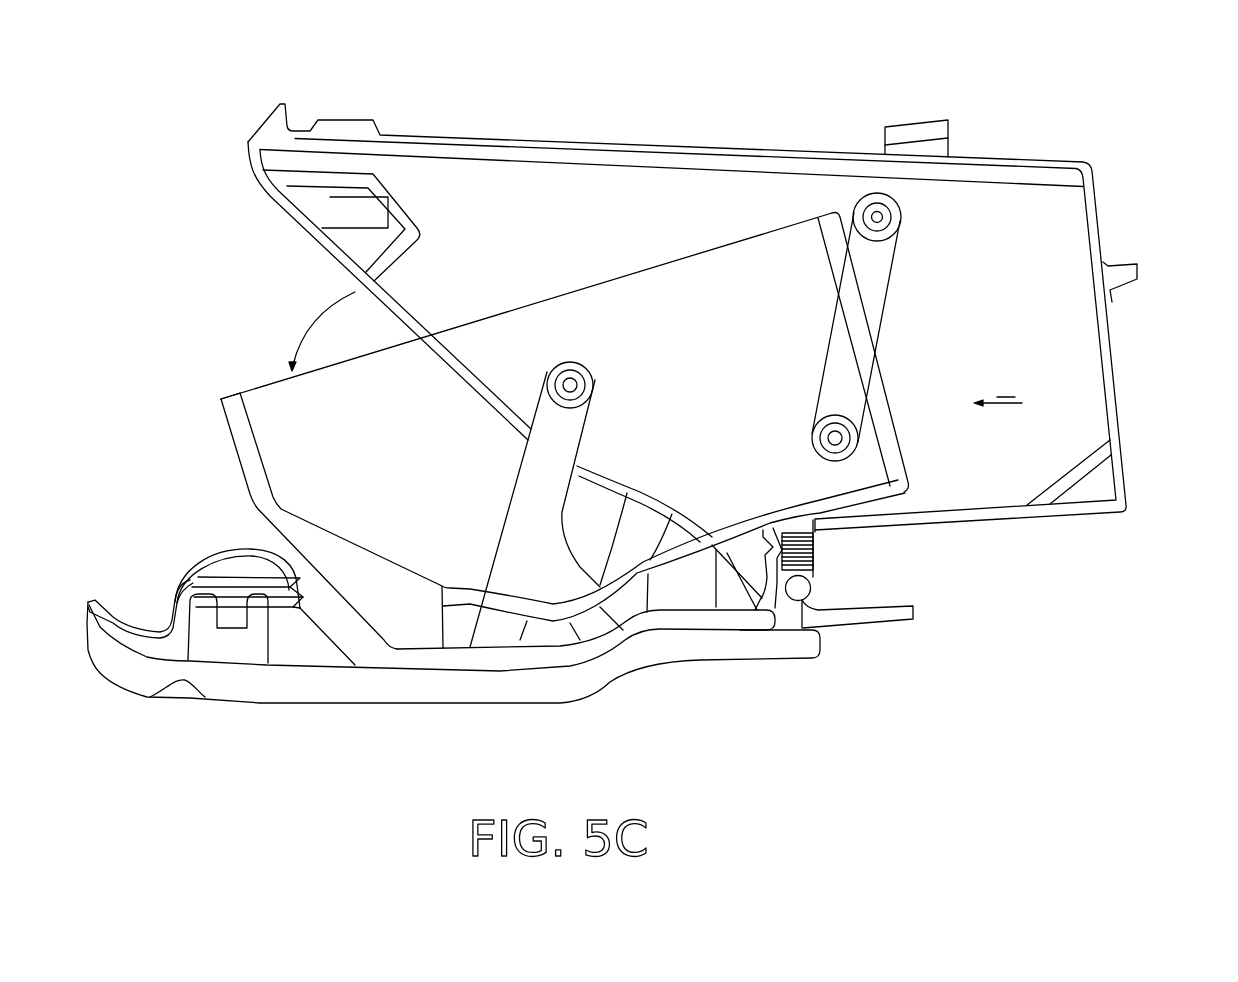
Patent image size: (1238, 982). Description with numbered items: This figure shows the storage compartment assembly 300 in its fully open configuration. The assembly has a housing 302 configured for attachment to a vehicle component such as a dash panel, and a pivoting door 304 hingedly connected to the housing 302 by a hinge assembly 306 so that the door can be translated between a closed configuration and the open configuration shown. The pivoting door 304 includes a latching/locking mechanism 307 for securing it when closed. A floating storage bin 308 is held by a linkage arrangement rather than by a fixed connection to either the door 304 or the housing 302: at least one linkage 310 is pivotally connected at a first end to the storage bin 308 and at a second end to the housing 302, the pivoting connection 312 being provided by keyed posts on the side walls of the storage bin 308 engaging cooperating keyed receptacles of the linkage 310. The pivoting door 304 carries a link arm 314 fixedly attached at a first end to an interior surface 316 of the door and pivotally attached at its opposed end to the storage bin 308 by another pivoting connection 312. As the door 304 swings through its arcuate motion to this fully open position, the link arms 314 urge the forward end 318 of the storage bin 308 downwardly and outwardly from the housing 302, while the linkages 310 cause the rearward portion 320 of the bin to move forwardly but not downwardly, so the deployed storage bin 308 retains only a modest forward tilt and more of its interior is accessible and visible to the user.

The storage compartment assembly 300 is at (1120, 77).
The housing 302 is at (1094, 210).
The pivoting door 304 is at (280, 690).
The hinge assembly 306 is at (826, 588).
The latching/locking mechanism 307 is at (180, 584).
The storage bin 308 is at (500, 322).
The linkage 310 is at (888, 258).
The pivoting connection 312 is at (577, 382).
The link arm 314 is at (532, 468).
The interior surface 316 is at (443, 625).
The forward end 318 is at (240, 387).
The rearward portion 320 is at (890, 375).